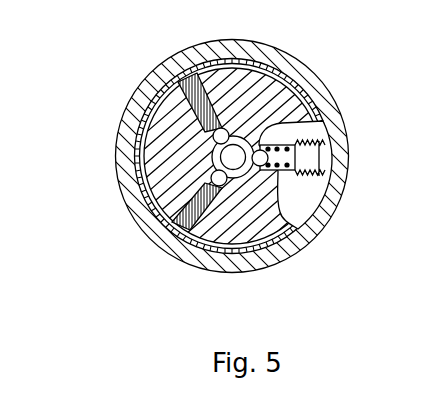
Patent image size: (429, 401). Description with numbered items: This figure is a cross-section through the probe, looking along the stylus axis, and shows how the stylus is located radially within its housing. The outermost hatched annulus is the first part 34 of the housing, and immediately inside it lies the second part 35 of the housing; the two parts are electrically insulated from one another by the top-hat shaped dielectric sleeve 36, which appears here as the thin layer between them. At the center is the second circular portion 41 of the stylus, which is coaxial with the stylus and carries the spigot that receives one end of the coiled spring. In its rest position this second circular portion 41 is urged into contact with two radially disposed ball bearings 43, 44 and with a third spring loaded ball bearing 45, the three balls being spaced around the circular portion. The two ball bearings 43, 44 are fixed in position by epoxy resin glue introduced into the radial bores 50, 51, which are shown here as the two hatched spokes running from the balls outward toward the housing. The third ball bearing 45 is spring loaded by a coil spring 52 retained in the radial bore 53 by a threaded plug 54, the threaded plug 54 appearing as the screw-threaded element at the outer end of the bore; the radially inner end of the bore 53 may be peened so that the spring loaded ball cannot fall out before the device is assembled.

The first part of the housing 34 is at (276, 46).
The second part of the housing 35 is at (292, 80).
The dielectric sleeve 36 is at (198, 44).
The second circular portion 41 is at (221, 157).
The ball bearing 43 is at (175, 124).
The ball bearing 44 is at (200, 194).
The third spring loaded ball bearing 45 is at (305, 110).
The radial bore 50 is at (176, 94).
The radial bore 51 is at (170, 237).
The coil spring 52 is at (313, 238).
The radial bore 53 is at (268, 137).
The threaded plug 54 is at (303, 164).